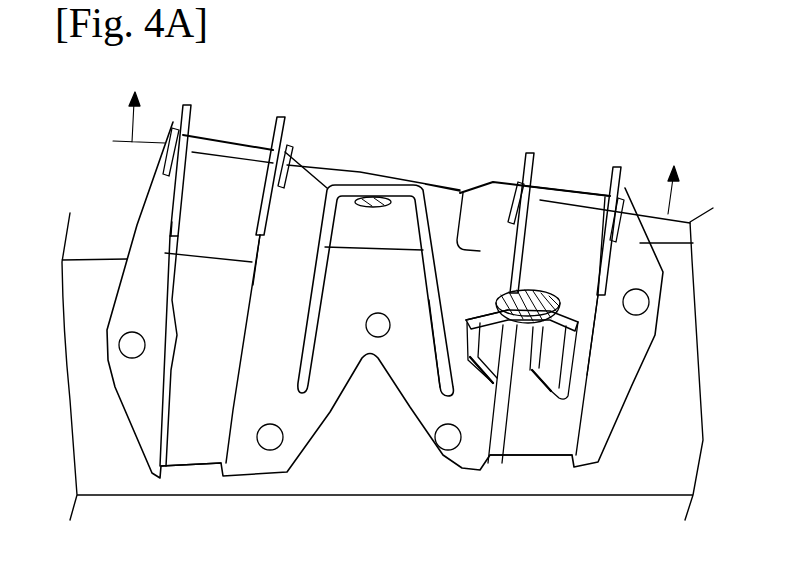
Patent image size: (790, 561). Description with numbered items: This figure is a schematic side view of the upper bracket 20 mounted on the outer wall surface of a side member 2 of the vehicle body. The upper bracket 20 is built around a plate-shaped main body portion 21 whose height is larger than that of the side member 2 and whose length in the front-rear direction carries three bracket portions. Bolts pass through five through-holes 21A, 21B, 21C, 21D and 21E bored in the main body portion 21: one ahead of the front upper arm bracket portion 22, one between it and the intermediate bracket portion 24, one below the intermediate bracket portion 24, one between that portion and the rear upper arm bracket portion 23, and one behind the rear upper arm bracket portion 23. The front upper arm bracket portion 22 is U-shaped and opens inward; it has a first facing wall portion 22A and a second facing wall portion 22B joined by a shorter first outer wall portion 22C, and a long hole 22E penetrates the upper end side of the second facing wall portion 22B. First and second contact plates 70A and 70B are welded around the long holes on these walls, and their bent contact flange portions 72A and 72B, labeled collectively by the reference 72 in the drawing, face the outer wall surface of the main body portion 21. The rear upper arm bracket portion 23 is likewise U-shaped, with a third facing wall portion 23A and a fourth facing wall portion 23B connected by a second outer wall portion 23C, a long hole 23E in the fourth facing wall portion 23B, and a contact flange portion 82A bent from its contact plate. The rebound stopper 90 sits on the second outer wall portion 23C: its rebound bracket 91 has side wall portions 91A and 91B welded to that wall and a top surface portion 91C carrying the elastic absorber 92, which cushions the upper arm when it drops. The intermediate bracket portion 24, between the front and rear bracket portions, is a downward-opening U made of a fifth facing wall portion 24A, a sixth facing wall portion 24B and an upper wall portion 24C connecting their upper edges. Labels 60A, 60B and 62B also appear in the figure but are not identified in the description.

The side member 2 is at (98, 272).
The upper bracket 20 is at (471, 143).
The main body portion 21 is at (310, 412).
The through-hole 21A is at (126, 356).
The through-hole 21B is at (287, 455).
The through-hole 21C is at (371, 338).
The through-hole 21D is at (443, 450).
The through-hole 21E is at (653, 318).
The front upper arm bracket portion 22 is at (221, 343).
The first facing wall portion 22A is at (172, 225).
The second facing wall portion 22B is at (257, 232).
The first outer wall portion 22C is at (190, 452).
The second long hole 22E is at (208, 226).
The rear upper arm bracket portion 23 is at (573, 170).
The third facing wall portion 23A is at (513, 274).
The fourth facing wall portion 23B is at (605, 305).
The second outer wall portion 23C is at (530, 457).
The second long hole 23E is at (568, 217).
The intermediate bracket portion 24 is at (380, 172).
The fifth facing wall portion 24A is at (333, 282).
The sixth facing wall portion 24B is at (430, 308).
The upper wall portion 24C is at (352, 178).
The first pin 60A is at (528, 153).
The second pin 60B is at (627, 181).
The pin retainer 62B is at (630, 203).
The first contact plate 70A is at (184, 105).
The second contact plate 70B is at (285, 118).
The rod retainers 72 is at (223, 125).
The contact flange portion 72A is at (165, 148).
The contact flange portion 72B is at (294, 149).
The contact flange portion 82A is at (510, 205).
The rebound stopper 90 is at (582, 365).
The rebound bracket 91 is at (513, 397).
The side wall portion 91A is at (490, 390).
The side wall portion 91B is at (548, 398).
The top surface portion 91C is at (490, 310).
The absorber 92 is at (537, 289).